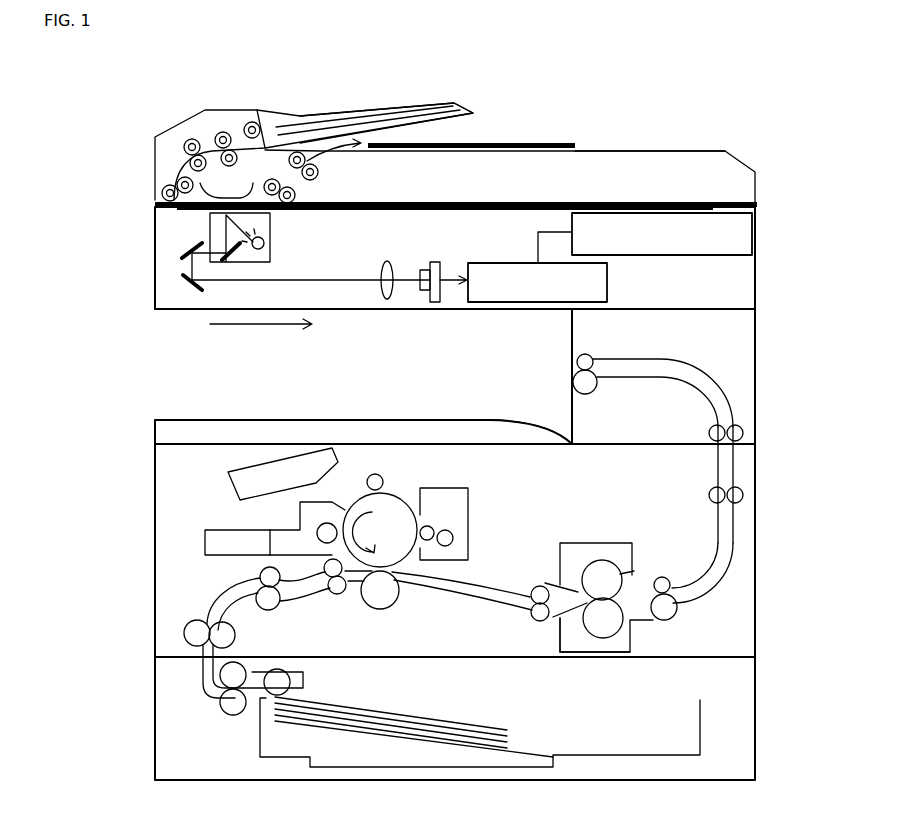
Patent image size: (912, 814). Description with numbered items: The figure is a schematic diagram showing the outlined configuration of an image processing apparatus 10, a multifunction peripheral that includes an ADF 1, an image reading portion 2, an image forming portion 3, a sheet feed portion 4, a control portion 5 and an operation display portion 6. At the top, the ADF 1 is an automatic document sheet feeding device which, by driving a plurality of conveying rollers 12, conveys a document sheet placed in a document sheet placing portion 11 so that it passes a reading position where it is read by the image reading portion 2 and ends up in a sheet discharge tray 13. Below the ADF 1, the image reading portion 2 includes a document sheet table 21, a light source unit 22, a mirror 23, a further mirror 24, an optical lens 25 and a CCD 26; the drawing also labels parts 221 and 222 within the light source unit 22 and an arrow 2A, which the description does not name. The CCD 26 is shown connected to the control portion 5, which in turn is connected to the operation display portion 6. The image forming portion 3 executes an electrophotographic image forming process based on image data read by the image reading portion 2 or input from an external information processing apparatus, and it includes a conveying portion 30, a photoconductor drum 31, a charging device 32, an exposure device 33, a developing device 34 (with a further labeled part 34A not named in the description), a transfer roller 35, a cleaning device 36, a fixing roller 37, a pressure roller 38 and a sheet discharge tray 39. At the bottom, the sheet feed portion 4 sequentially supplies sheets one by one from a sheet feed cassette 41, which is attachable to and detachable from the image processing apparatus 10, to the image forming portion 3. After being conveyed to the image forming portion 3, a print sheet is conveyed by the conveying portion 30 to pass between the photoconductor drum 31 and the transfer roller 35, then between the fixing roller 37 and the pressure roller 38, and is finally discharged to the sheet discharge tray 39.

The image processing apparatus 10 is at (125, 95).
The ADF 1 is at (155, 155).
The document sheet placing portion 11 is at (326, 115).
The conveying rollers 12 is at (162, 192).
The sheet discharge tray 13 is at (592, 150).
The image reading portion 2 is at (155, 266).
The document sheet table 21 is at (410, 212).
The light source unit 22 is at (270, 252).
The lamp 221 is at (265, 238).
The reflecting mirror 222 is at (240, 254).
The mirror 23 is at (186, 254).
The mirror 24 is at (194, 284).
The optical lens 25 is at (389, 300).
The CCD 26 is at (437, 302).
The control portion 5 is at (494, 262).
The operation display portion 6 is at (752, 237).
The scanning direction 2A is at (258, 327).
The image forming portion 3 is at (174, 472).
The sheet discharge tray 39 is at (492, 418).
The exposure device 33 is at (228, 490).
The developing device 34 is at (300, 510).
The toner supply portion 34A is at (222, 556).
The photoconductor drum 31 is at (399, 504).
The charging device 32 is at (367, 482).
The cleaning device 36 is at (447, 488).
The transfer roller 35 is at (386, 605).
The conveying portion 30 is at (176, 611).
The fixing roller 37 is at (622, 565).
The pressure roller 38 is at (583, 640).
The sheet feed portion 4 is at (155, 720).
The sheet feed cassette 41 is at (700, 730).